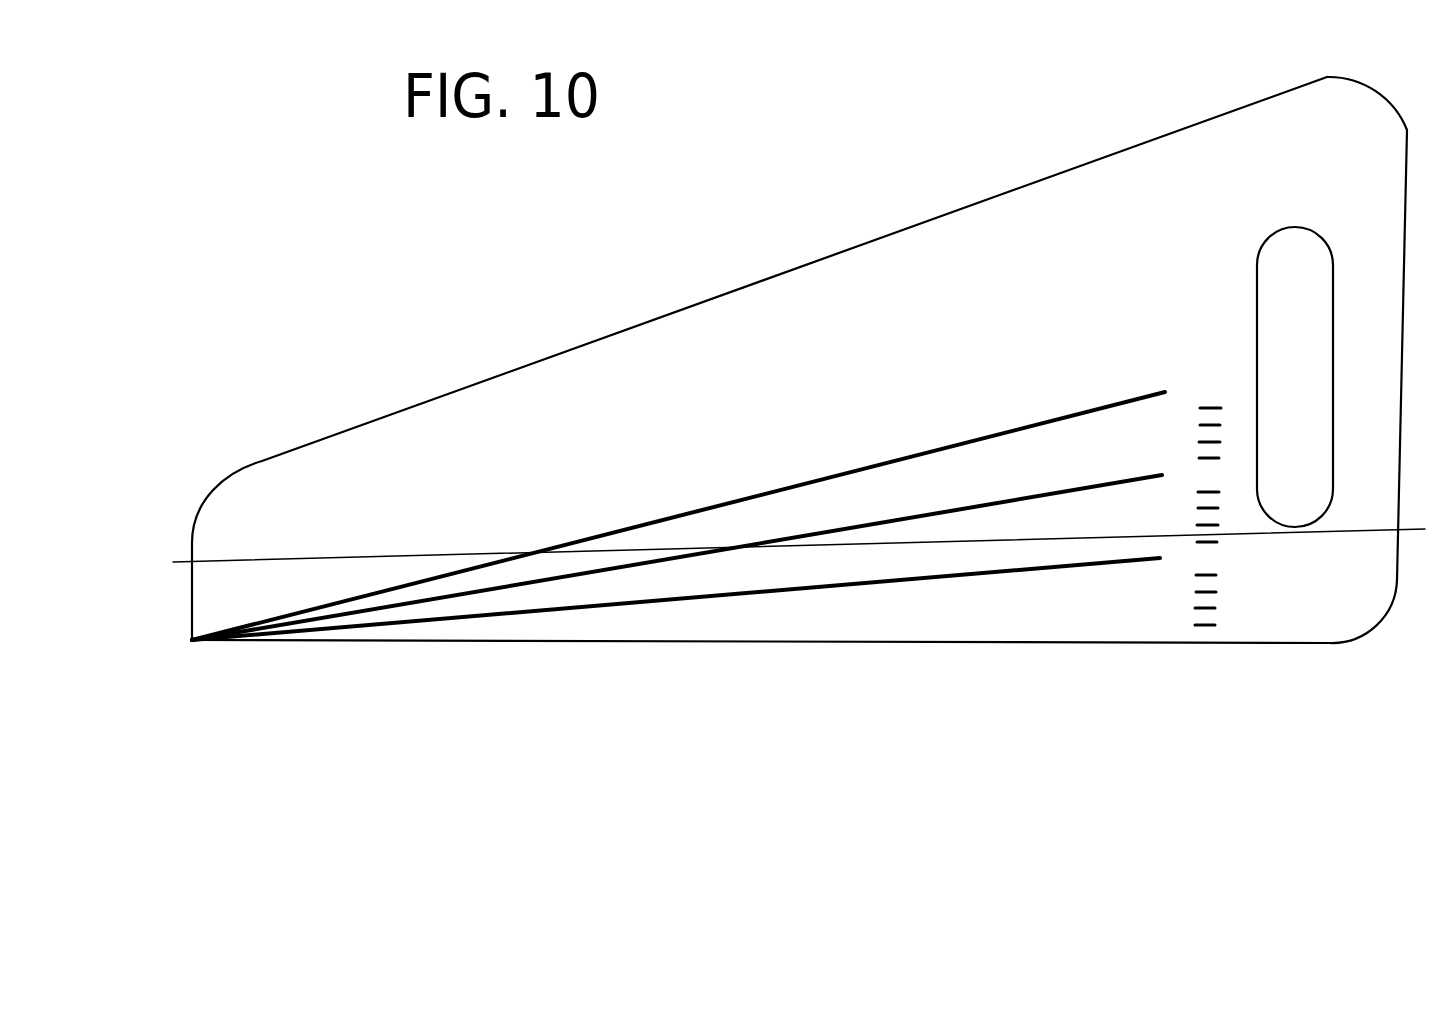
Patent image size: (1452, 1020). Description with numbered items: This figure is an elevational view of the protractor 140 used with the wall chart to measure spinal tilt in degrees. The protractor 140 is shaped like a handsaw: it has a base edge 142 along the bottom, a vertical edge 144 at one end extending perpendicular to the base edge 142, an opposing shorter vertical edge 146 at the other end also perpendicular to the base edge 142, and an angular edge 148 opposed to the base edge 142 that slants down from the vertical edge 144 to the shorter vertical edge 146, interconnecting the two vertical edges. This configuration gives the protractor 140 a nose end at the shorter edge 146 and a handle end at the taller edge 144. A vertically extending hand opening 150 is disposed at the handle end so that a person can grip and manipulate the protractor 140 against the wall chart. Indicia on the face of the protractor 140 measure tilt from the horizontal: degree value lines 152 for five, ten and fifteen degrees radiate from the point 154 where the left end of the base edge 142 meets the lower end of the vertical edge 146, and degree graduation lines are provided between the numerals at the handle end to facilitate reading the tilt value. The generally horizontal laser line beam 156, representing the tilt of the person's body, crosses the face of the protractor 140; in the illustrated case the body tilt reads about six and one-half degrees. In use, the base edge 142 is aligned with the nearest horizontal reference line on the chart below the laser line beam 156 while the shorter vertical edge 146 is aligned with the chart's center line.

The protractor 140 is at (1215, 108).
The base edge 142 is at (808, 643).
The vertical edge 144 is at (1403, 372).
The vertical edge 146 is at (191, 601).
The angular edge 148 is at (728, 292).
The hand opening 150 is at (1321, 231).
The degree value lines 152 is at (648, 523).
The intersection point 154 is at (192, 643).
The laser line beam 156 is at (1410, 528).